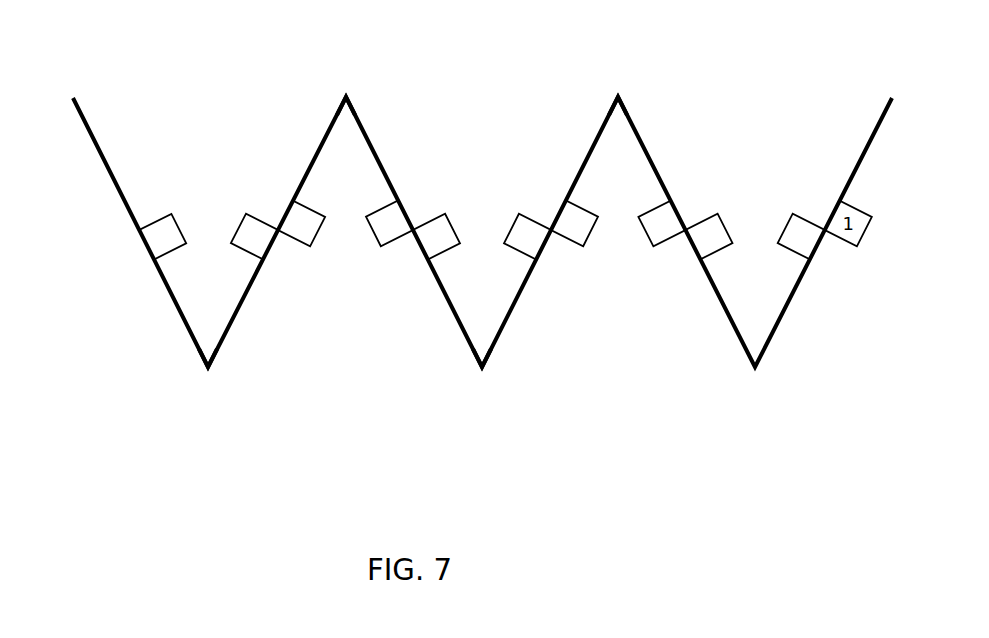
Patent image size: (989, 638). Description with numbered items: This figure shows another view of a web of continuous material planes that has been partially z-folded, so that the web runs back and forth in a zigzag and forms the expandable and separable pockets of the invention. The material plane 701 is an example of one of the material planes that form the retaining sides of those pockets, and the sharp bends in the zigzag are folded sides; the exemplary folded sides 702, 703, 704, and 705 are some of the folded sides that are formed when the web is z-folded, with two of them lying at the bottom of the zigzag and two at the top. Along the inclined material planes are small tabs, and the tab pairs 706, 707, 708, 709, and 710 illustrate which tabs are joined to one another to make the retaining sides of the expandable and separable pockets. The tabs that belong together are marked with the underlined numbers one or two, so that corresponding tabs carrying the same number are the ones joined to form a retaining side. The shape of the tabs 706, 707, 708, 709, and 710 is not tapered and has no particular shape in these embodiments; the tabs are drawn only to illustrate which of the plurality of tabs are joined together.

The material plane 701 is at (107, 188).
The folded side 702 is at (208, 377).
The folded side 703 is at (490, 377).
The folded side 704 is at (617, 92).
The folded side 705 is at (345, 92).
The tab pair 706 is at (250, 203).
The tab pair 707 is at (390, 257).
The tab pair 708 is at (522, 207).
The tab pair 709 is at (658, 260).
The tab pair 710 is at (795, 203).